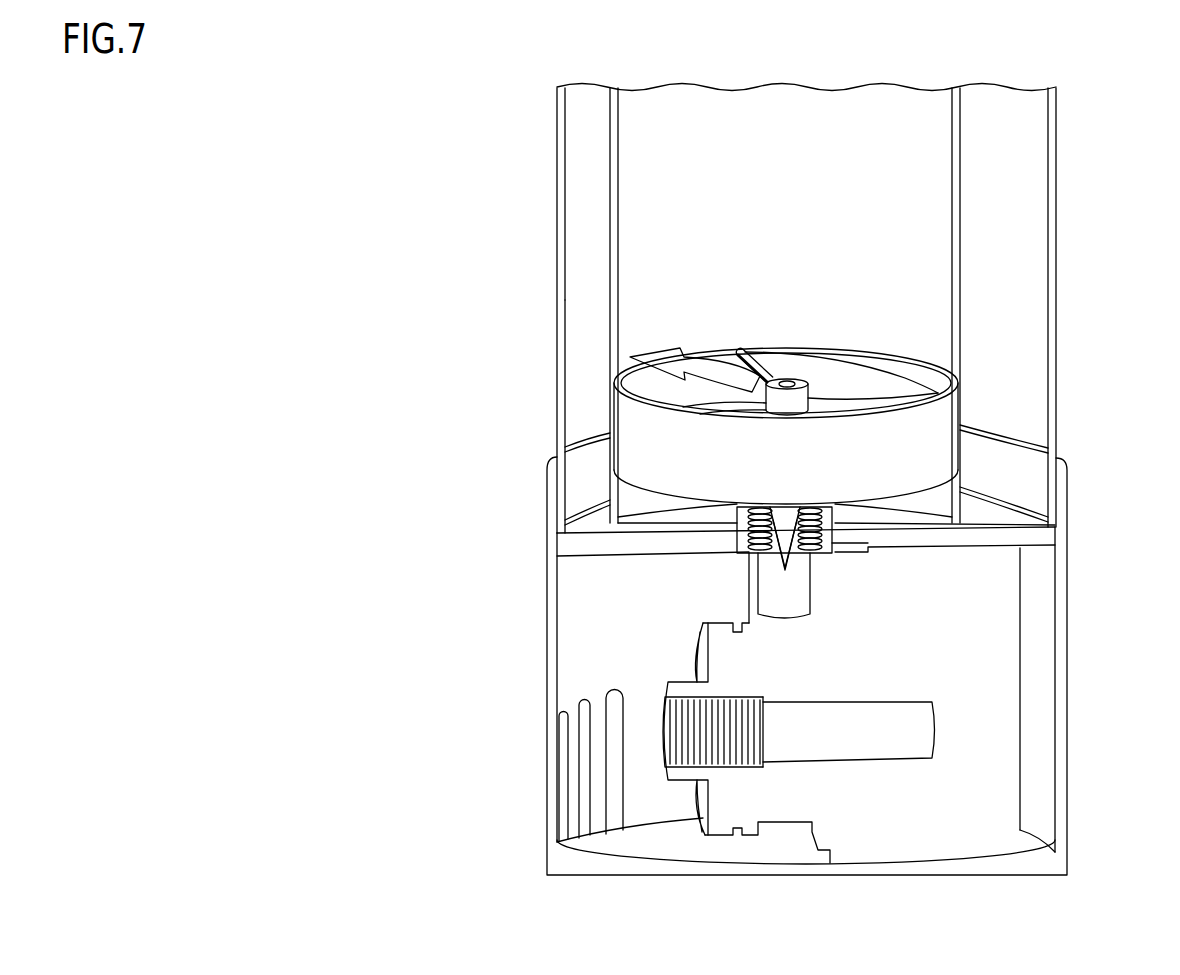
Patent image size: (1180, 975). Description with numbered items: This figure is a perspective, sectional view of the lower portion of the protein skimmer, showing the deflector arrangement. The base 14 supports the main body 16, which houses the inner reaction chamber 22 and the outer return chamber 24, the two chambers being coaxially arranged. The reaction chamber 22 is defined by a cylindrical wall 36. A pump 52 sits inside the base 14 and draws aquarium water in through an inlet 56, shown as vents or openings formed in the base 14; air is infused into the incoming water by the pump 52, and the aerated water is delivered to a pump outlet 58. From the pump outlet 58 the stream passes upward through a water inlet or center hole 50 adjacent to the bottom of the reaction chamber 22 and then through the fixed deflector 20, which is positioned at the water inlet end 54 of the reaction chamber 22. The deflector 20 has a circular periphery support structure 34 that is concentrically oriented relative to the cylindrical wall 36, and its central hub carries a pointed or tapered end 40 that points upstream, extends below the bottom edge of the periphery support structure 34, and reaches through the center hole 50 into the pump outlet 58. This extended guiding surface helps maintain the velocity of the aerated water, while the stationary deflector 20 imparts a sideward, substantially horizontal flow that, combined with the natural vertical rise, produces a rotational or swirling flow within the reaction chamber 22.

The base 14 is at (1067, 677).
The main body 16 is at (1056, 207).
The deflector 20 is at (840, 348).
The inner reaction chamber 22 is at (799, 181).
The outer return chamber 24 is at (1023, 329).
The periphery support structure 34 is at (702, 472).
The cylindrical wall 36 is at (959, 193).
The tapered end 40 is at (783, 540).
The center hole 50 is at (738, 510).
The pump 52 is at (970, 823).
The water inlet end 54 is at (610, 487).
The inlet 56 is at (582, 777).
The pump outlet 58 is at (800, 548).